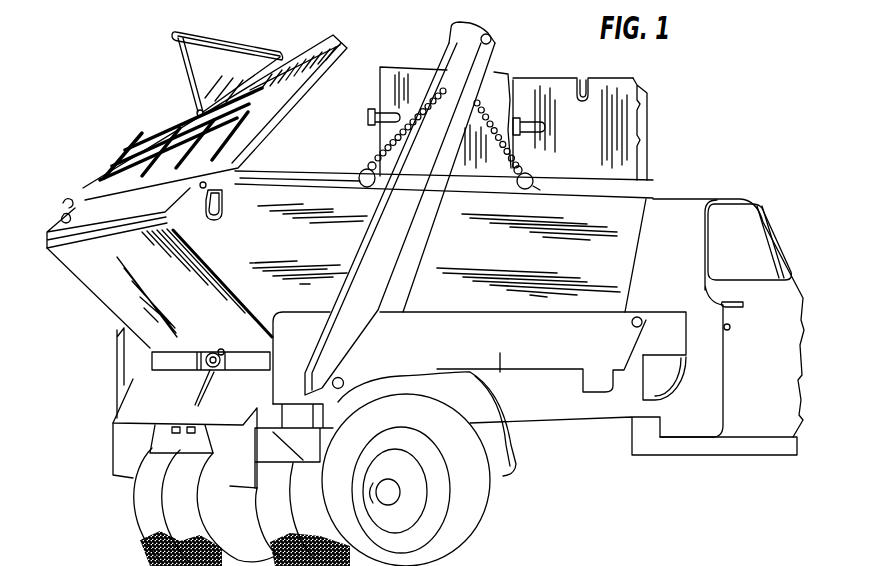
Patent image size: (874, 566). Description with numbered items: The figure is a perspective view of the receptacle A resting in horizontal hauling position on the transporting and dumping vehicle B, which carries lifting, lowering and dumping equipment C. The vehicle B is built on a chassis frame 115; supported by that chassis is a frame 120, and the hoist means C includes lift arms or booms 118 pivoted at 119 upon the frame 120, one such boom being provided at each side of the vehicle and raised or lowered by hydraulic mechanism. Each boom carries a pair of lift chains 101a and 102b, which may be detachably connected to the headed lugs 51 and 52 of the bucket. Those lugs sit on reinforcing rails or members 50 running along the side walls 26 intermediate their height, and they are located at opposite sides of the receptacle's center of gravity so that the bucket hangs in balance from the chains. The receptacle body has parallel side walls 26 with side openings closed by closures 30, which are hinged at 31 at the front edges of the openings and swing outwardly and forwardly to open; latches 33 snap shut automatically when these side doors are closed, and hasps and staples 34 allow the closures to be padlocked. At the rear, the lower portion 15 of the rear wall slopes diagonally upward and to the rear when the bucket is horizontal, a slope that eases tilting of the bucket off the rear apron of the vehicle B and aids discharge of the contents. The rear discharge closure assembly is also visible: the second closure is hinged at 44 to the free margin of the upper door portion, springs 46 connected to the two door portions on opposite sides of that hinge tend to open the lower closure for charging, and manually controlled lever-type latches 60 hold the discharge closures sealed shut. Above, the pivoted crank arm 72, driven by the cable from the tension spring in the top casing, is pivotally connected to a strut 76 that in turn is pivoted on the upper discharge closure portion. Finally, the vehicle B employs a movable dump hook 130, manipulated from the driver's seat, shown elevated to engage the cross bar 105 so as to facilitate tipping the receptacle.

The crank arm 72 is at (240, 43).
The strut 76 is at (187, 73).
The springs 46 is at (133, 143).
The hinge 44 is at (240, 137).
The latches 33 is at (365, 118).
The closures 30 is at (402, 82).
The hinge 31 is at (515, 80).
The hasps and staples 34 is at (590, 83).
The receptacle A is at (521, 110).
The headed lug 52 is at (543, 181).
The reinforcing rails 50 is at (592, 193).
The headed lug 51 is at (342, 192).
The latches 60 is at (65, 200).
The lift chain 102b is at (383, 183).
The lift chain 101a is at (485, 187).
The lift arms 118 is at (427, 210).
The hoist means C is at (400, 208).
The side walls 26 is at (448, 255).
The lower sloping portion of rear wall 15 is at (120, 287).
The cross bar 105 is at (227, 347).
The dump hook 130 is at (203, 378).
The pivot 119 is at (343, 378).
The frame 120 is at (513, 373).
The transporting and dumping vehicle B is at (550, 352).
The chassis frame 115 is at (536, 448).